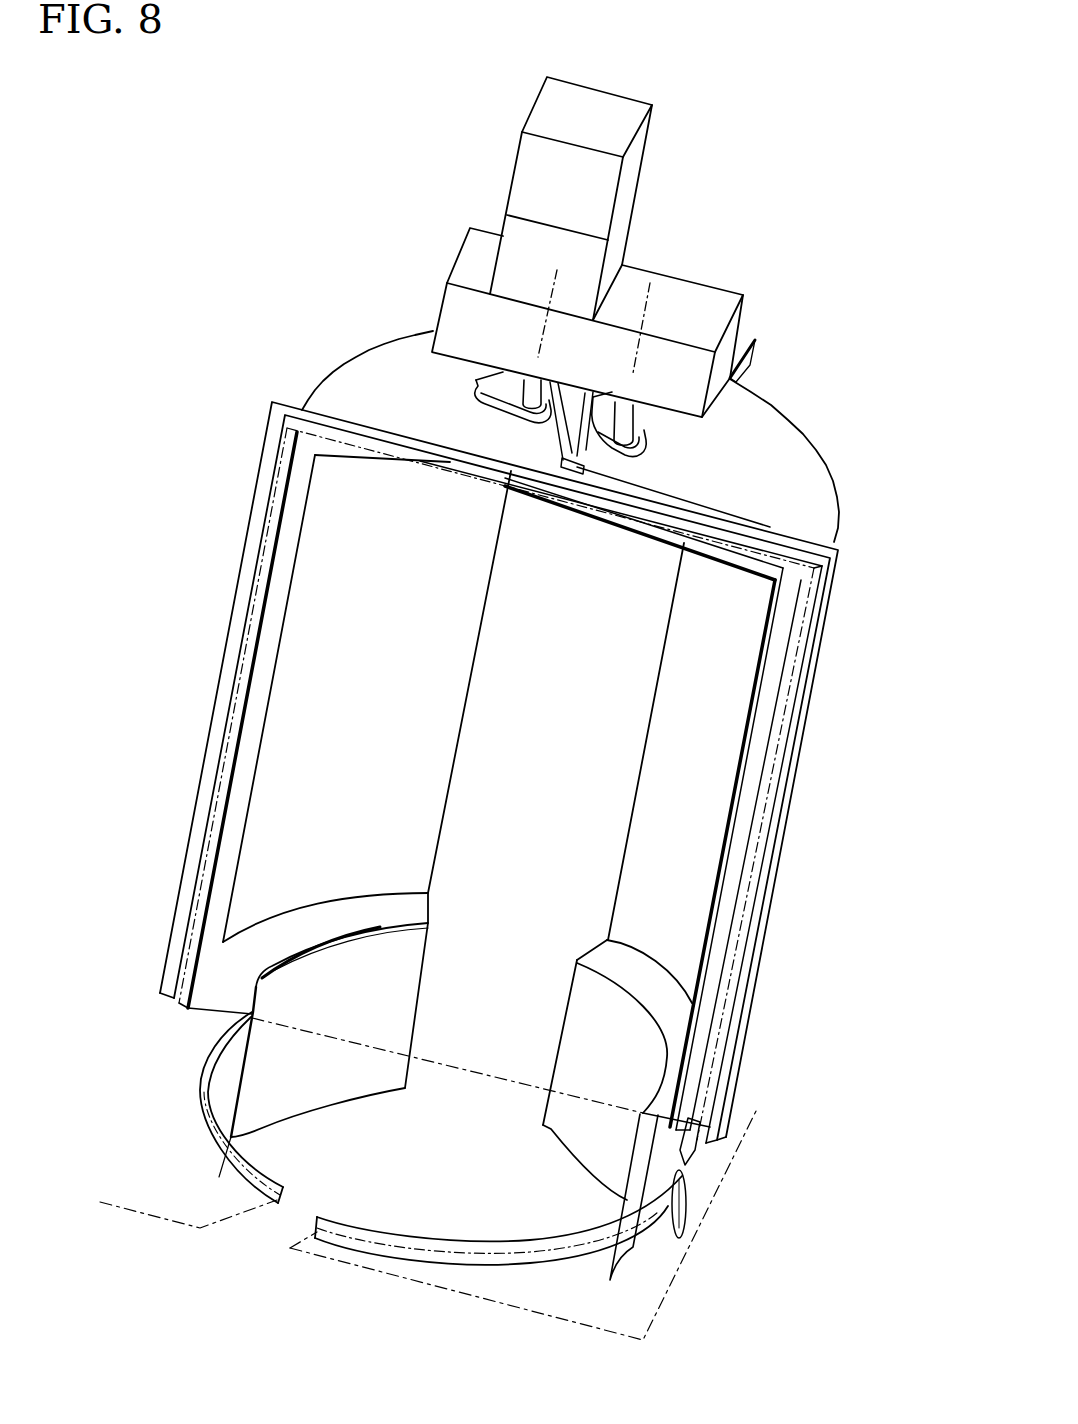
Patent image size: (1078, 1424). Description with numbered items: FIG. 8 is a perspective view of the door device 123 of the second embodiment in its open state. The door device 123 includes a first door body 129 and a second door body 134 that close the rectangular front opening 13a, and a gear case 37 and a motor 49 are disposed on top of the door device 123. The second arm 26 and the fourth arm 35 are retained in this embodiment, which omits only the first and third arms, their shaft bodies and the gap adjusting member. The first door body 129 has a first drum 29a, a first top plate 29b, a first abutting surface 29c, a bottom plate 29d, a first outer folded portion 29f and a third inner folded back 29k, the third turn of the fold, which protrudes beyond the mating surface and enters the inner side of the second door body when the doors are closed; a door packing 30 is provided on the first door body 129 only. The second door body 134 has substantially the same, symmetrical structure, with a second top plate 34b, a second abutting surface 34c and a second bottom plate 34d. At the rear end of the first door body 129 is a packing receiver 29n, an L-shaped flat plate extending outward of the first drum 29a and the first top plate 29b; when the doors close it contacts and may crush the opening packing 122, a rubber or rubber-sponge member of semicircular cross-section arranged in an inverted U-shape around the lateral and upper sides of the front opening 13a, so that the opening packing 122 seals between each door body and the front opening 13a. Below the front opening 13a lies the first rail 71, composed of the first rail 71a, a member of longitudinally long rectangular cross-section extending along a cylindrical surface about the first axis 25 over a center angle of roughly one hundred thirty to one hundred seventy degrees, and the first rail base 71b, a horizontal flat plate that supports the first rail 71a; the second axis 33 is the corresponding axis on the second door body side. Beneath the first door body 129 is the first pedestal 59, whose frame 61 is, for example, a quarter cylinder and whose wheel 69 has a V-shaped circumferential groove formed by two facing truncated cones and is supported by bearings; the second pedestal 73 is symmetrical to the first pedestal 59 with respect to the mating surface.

The motor 49 is at (643, 157).
The gear case 37 is at (743, 293).
The first axis 25 is at (553, 290).
The second axis 33 is at (648, 295).
The door device 123 is at (905, 217).
The second top plate 34b is at (357, 370).
The first top plate 29b is at (808, 447).
The packing receiver 29n is at (760, 363).
The second arm 26 is at (478, 377).
The fourth arm 35 is at (645, 441).
The door packing 30 is at (663, 512).
The opening packing 122 is at (252, 507).
The first drum 29a is at (838, 549).
The front opening 13a is at (270, 575).
The second abutting surface 34c is at (270, 613).
The second door body 134 is at (206, 723).
The first abutting surface 29c is at (775, 688).
The third inner folded back 29k is at (706, 946).
The bottom plate 29d is at (677, 1052).
The first outer folded portion 29f is at (650, 762).
The first door body 129 is at (897, 350).
The second pedestal 73 is at (437, 972).
The second bottom plate 34d is at (307, 945).
The frame 61 is at (567, 1013).
The first pedestal 59 is at (568, 950).
The wheel 69 is at (687, 1198).
The first rail 71 is at (348, 1320).
The first rail 71a is at (440, 1268).
The first rail base 71b is at (477, 1300).